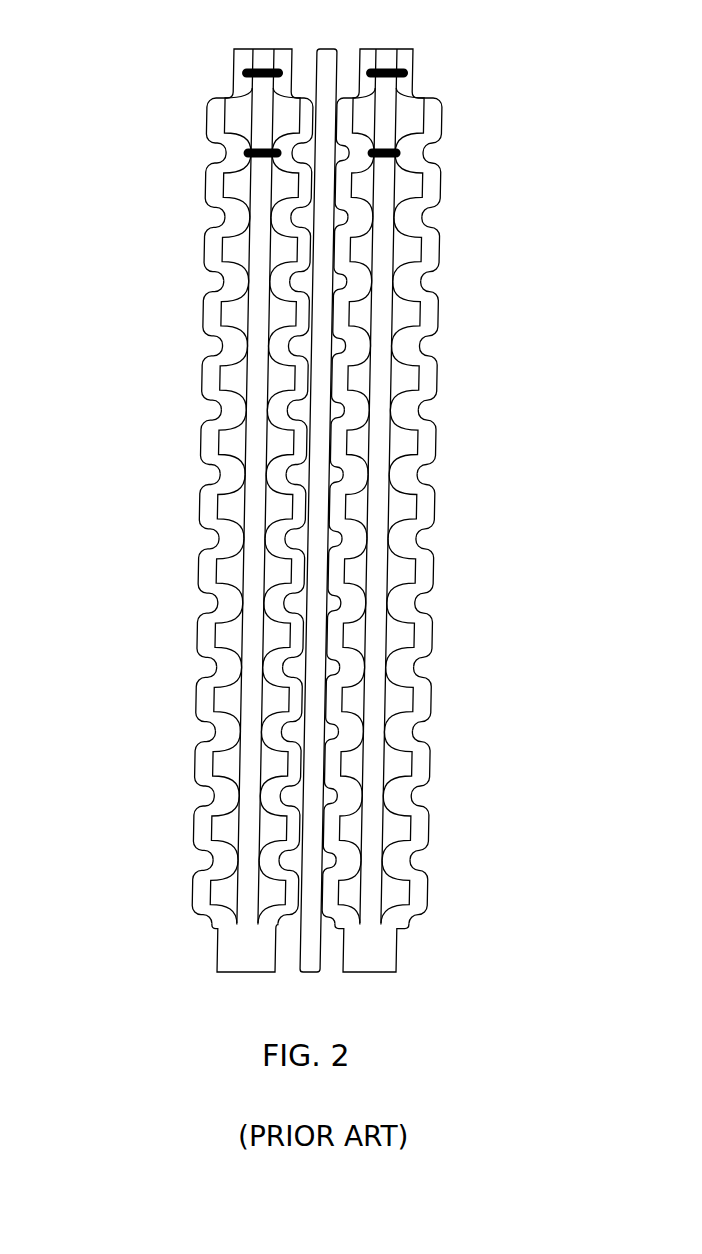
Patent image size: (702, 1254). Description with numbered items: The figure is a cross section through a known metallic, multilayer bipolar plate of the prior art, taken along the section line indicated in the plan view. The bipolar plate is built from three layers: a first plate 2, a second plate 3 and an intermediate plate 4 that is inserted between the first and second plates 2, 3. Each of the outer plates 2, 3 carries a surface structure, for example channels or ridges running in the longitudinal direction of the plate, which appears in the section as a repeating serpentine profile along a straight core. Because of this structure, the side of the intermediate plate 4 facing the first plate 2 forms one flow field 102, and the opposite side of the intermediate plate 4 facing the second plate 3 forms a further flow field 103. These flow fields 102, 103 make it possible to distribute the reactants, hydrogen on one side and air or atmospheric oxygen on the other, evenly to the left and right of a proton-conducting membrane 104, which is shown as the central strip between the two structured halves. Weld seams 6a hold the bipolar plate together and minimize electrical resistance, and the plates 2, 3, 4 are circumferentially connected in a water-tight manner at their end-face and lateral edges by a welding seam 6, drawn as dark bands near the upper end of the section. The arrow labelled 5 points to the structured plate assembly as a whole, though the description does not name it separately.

The first plate 2 is at (203, 511).
The second plate 3 is at (300, 578).
The intermediate plate 4 is at (258, 375).
The tube assembly 5 is at (183, 243).
The welding seam 6 is at (243, 72).
The weld seams 6a is at (248, 152).
The flow field 102 is at (290, 738).
The flow field 103 is at (338, 738).
The proton-conducting membrane 104 is at (308, 835).